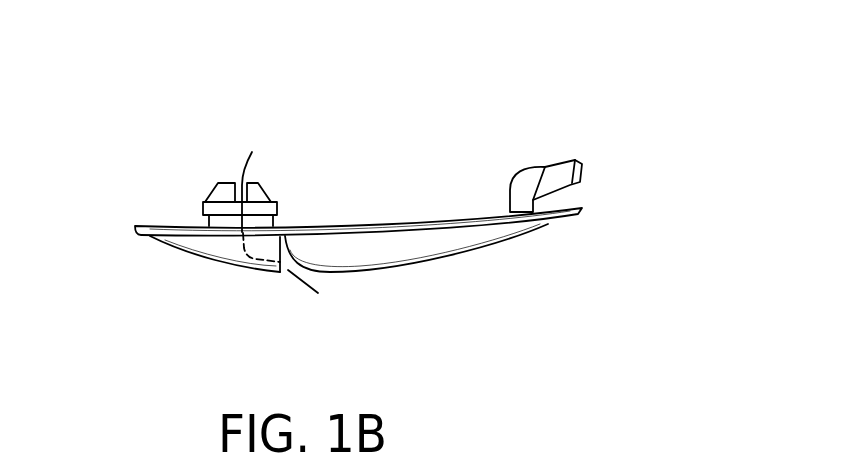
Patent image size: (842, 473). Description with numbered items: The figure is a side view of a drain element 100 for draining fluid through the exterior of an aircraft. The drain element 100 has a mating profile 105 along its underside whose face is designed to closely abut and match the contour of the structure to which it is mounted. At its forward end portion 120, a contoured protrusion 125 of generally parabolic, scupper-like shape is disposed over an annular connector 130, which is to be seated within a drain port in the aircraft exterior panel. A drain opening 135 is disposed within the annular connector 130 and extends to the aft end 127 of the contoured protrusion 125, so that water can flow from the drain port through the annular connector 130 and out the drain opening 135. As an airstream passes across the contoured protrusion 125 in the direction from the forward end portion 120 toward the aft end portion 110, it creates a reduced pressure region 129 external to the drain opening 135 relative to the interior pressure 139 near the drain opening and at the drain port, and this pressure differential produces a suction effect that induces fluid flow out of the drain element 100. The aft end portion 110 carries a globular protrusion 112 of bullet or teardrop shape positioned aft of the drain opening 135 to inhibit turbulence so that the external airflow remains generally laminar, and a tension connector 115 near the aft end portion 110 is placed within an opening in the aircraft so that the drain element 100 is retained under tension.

The drain element 100 is at (172, 150).
The mating profile 105 is at (418, 220).
The aft end portion 110 is at (513, 238).
The globular protrusion 112 is at (380, 270).
The tension connector 115 is at (582, 177).
The forward end portion 120 is at (162, 242).
The contoured protrusion 125 is at (232, 253).
The aft end of the contoured protrusion 127 is at (248, 277).
The reduced pressure region 129 is at (293, 288).
The annular connector 130 is at (233, 193).
The drain opening 135 is at (286, 237).
The interior pressure 139 is at (225, 156).